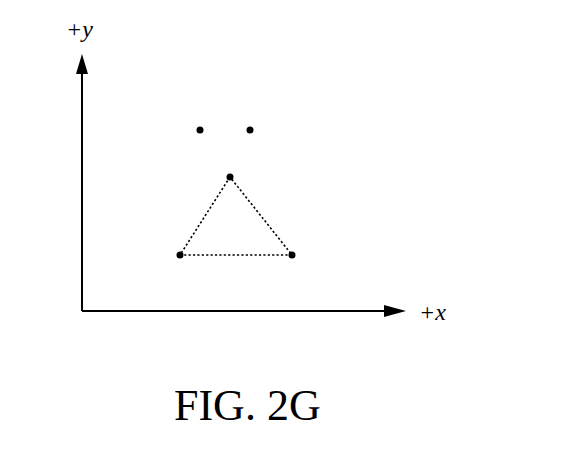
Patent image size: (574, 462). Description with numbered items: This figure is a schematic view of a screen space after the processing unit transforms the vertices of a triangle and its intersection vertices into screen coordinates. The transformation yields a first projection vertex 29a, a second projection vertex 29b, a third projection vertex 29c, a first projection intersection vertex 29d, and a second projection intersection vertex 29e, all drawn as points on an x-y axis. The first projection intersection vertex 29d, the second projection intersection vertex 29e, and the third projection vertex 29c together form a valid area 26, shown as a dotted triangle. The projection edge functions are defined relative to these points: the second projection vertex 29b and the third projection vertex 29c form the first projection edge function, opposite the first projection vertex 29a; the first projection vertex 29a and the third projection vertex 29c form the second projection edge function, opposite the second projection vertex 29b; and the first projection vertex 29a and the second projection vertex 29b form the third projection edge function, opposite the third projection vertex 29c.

The valid area 26 is at (236, 216).
The first projection vertex 29a is at (250, 126).
The second projection vertex 29b is at (200, 126).
The third projection vertex 29c is at (233, 177).
The first projection intersection vertex 29d is at (179, 259).
The second projection intersection vertex 29e is at (293, 258).